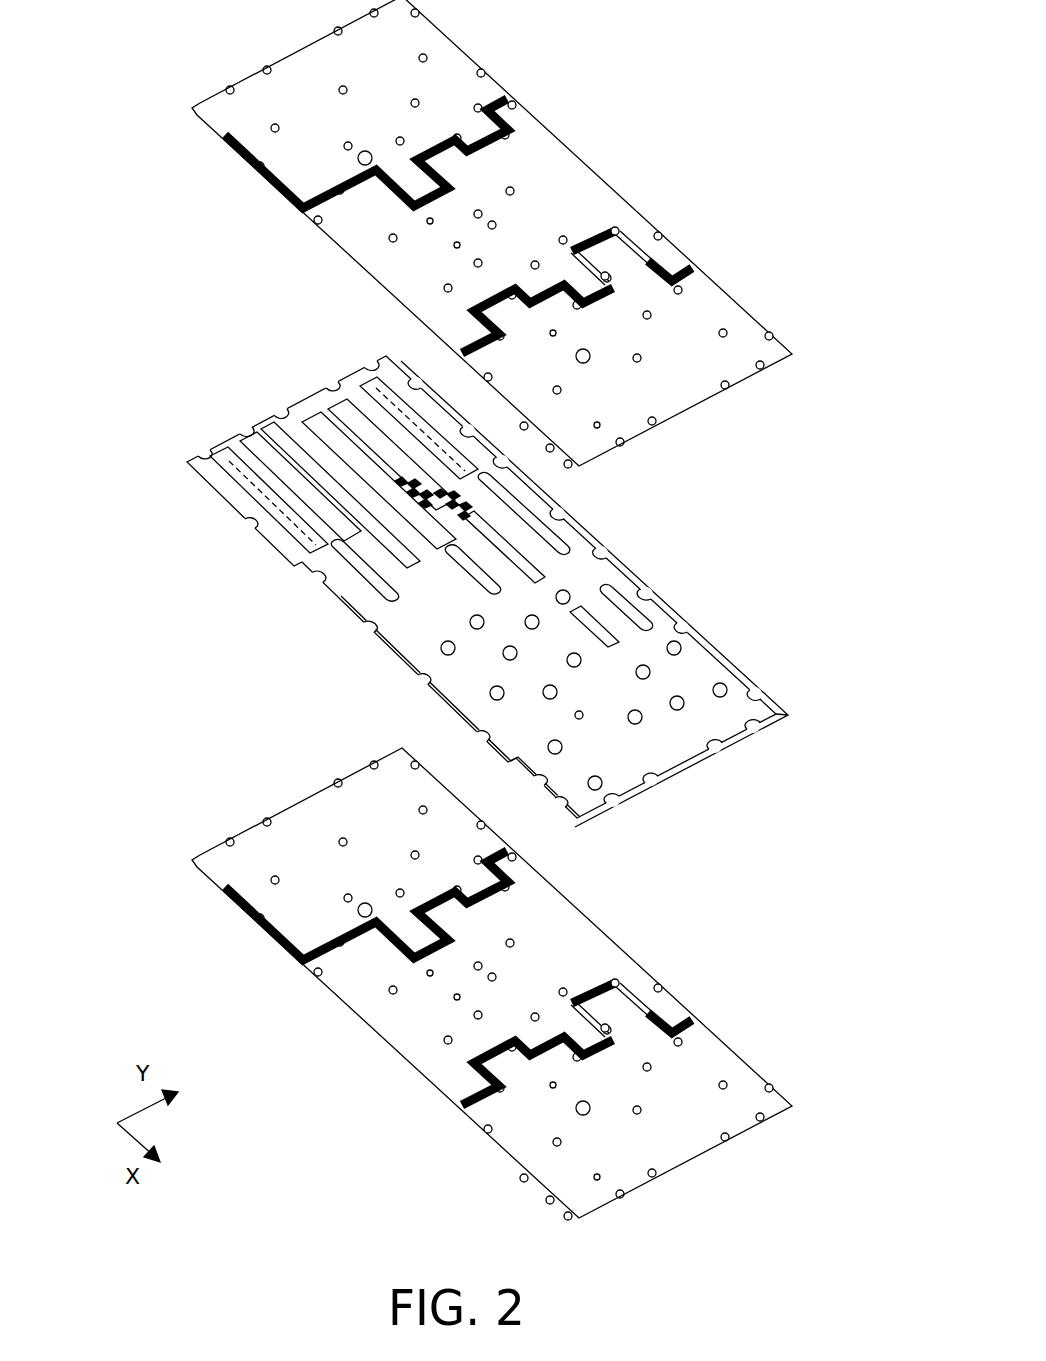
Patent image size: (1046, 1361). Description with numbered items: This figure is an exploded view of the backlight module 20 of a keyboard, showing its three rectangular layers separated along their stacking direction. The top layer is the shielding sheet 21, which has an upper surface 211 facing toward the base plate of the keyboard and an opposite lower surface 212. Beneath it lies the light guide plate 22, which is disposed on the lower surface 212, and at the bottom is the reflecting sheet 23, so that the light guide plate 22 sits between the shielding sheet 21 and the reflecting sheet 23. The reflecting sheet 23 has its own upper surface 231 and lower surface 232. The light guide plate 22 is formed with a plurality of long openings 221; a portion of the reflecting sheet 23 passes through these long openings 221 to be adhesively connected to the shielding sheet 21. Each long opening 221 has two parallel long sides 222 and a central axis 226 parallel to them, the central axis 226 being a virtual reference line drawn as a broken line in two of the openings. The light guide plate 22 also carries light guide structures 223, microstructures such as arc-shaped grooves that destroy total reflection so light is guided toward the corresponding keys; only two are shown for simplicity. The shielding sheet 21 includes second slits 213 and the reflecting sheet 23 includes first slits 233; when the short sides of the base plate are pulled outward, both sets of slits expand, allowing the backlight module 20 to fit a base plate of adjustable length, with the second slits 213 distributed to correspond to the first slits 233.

The backlight module 20 is at (170, 42).
The shielding sheet 21 is at (283, 80).
The upper surface 211 is at (548, 147).
The lower surface 212 is at (225, 140).
The second slits 213 is at (680, 272).
The light guide plate 22 is at (290, 420).
The long openings 221 is at (385, 380).
The long side 222 is at (360, 368).
The light guide structures 223 is at (470, 503).
The central axis 226 is at (235, 467).
The reflecting sheet 23 is at (280, 815).
The upper surface 231 is at (222, 850).
The lower surface 232 is at (212, 885).
The first slits 233 is at (683, 1013).